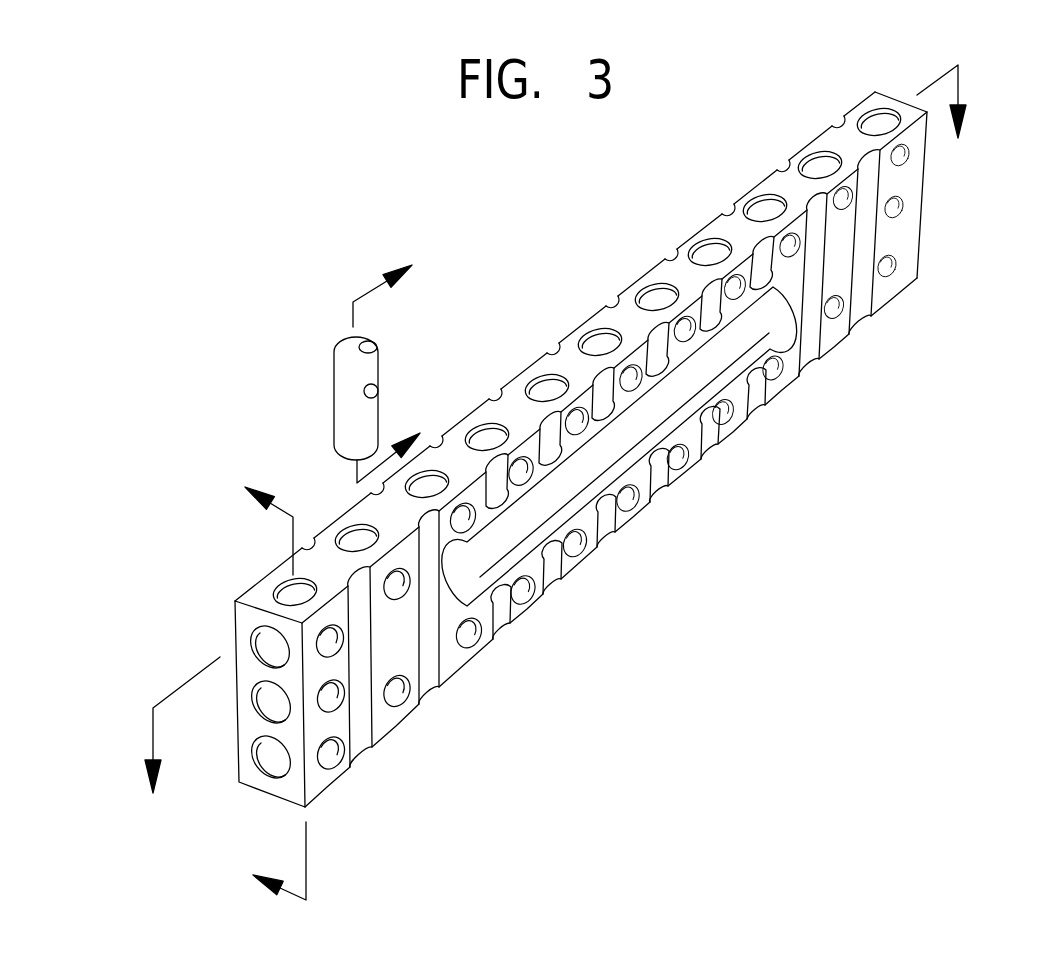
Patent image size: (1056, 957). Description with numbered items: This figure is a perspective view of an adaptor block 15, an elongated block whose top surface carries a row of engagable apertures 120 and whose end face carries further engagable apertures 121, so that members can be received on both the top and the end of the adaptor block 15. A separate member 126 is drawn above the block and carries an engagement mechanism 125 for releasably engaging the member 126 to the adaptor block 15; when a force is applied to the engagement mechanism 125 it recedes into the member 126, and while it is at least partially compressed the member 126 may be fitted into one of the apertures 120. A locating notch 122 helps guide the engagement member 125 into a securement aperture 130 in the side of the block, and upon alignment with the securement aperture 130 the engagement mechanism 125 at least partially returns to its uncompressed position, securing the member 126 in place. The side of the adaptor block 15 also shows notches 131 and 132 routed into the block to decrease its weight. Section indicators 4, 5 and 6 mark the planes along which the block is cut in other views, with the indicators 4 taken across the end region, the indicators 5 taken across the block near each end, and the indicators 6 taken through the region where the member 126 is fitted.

The adaptor block 15 is at (573, 567).
The engagable aperture 120 is at (537, 388).
The engagable aperture 121 is at (275, 650).
The locating notch 122 is at (666, 268).
The engagement mechanism 125 is at (377, 388).
The member 126 is at (347, 377).
The securement aperture 130 is at (400, 588).
The notch 131 is at (753, 320).
The notch 132 is at (837, 337).
The section line 4- 4 is at (264, 680).
The section line 5- 5 is at (555, 450).
The section line 6- 6 is at (395, 356).